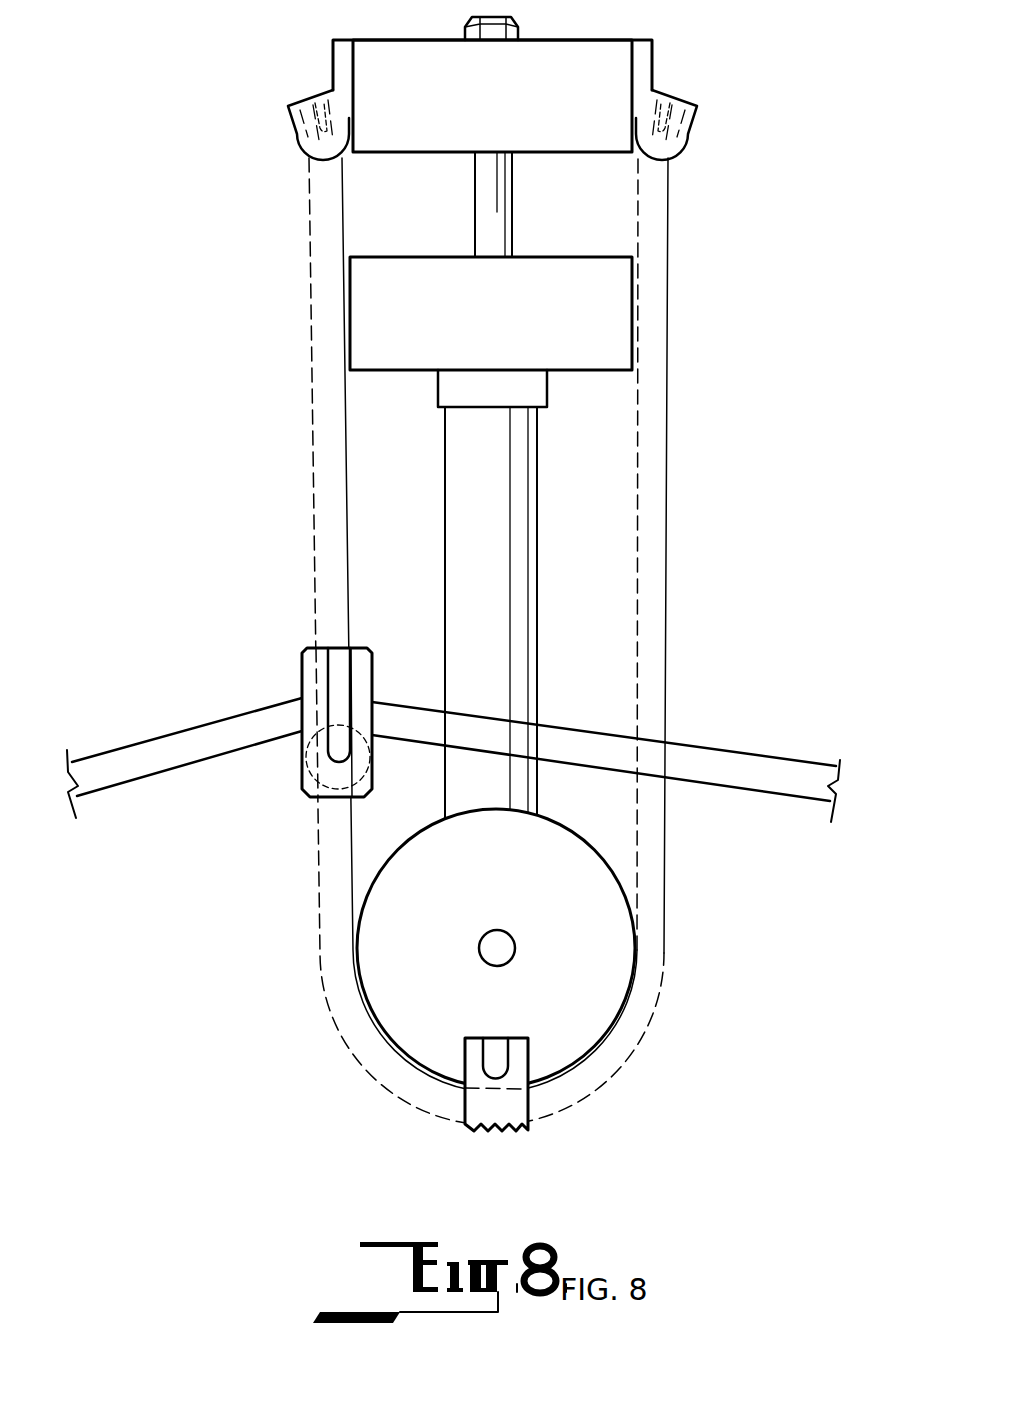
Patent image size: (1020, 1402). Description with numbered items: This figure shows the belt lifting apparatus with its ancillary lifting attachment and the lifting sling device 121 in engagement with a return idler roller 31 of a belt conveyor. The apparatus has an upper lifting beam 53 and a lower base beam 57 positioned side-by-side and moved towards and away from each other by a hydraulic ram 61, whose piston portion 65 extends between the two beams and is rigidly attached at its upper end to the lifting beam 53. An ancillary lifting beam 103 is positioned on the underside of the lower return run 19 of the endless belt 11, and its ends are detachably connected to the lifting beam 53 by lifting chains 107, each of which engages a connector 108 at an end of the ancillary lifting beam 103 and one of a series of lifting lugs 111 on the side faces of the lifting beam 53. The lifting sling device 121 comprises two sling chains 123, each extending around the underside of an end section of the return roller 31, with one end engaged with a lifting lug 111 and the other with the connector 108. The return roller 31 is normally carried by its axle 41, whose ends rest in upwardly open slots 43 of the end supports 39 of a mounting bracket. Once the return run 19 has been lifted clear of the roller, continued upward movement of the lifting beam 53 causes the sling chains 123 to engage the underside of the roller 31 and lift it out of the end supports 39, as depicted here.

The endless belt 11 is at (800, 760).
The lower return run 19 is at (742, 755).
The return idler roller 31 is at (602, 855).
The end support 39 is at (470, 1068).
The axle 41 is at (505, 945).
The slot 43 is at (490, 1052).
The lifting beam 53 is at (597, 50).
The base beam 57 is at (620, 323).
The hydraulic ram 61 is at (538, 668).
The piston portion 65 is at (505, 205).
The ancillary lifting beam 103 is at (300, 757).
The lifting chain 107 is at (320, 357).
The connector 108 is at (313, 787).
The lifting lug 111 is at (298, 128).
The lifting sling device 121 is at (650, 612).
The sling chain 123 is at (668, 495).